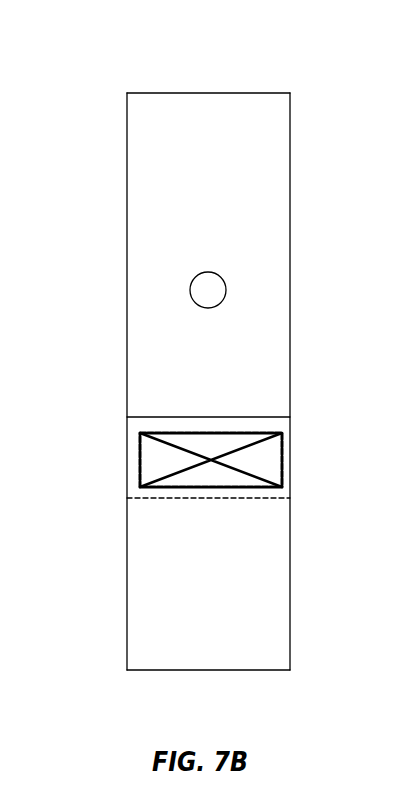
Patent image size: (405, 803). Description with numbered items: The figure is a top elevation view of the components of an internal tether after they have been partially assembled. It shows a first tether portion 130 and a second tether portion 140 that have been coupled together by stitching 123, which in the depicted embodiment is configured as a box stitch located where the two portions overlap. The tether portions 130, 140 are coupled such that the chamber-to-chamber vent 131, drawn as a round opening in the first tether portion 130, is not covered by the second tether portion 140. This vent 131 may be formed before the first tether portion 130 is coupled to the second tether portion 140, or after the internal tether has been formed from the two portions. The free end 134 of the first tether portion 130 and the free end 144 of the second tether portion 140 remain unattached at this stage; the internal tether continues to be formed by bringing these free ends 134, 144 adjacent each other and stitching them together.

The stitching 123 is at (282, 467).
The first tether portion 130 is at (160, 244).
The chamber-to-chamber vent 131 is at (215, 287).
The free end of first tether portion 134 is at (182, 107).
The second tether portion 140 is at (173, 460).
The free end of second tether portion 144 is at (263, 655).